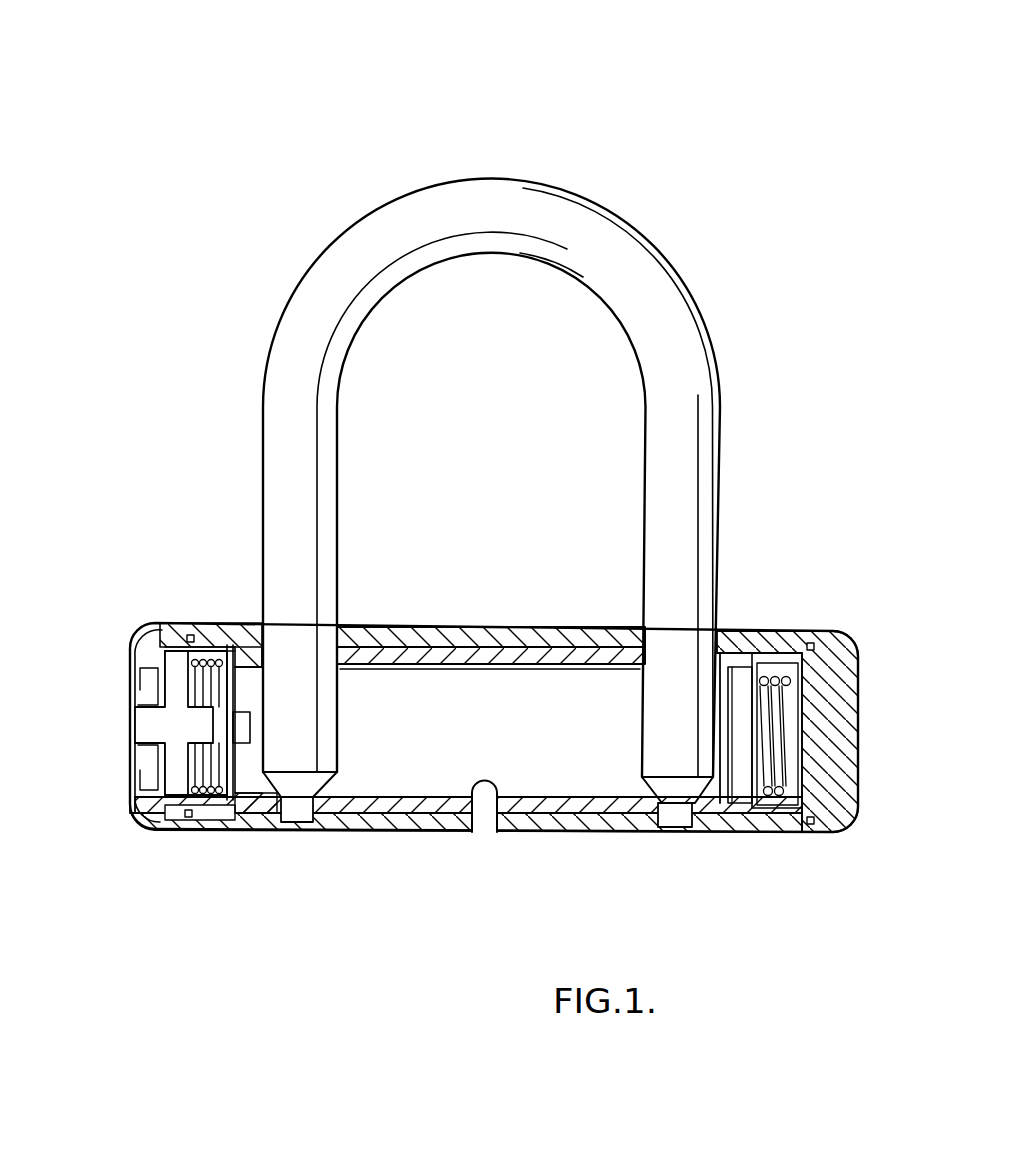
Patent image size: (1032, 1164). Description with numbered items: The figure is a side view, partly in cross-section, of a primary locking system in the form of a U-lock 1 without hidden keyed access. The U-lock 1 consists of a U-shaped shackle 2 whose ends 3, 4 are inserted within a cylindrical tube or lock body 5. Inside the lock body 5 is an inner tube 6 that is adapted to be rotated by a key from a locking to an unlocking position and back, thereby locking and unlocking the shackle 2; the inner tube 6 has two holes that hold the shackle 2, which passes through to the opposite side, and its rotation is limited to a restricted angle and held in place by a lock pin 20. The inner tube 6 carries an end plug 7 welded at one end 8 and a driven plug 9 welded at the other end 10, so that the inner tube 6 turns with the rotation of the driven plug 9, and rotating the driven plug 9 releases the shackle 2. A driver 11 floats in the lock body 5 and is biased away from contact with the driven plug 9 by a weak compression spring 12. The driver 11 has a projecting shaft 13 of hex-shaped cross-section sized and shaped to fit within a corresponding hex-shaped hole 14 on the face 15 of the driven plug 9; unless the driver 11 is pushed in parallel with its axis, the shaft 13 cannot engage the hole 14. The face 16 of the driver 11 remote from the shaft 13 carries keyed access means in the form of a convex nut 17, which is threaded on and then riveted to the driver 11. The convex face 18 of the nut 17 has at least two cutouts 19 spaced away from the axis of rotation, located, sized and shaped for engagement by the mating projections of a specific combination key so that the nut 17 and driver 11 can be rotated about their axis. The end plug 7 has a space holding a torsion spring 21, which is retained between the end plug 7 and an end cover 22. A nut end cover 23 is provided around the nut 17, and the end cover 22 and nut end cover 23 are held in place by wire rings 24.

The U-lock 1 is at (363, 150).
The U-shaped shackle 2 is at (616, 259).
The shackle end 3 is at (297, 820).
The shackle end 4 is at (675, 823).
The lock body 5 is at (390, 628).
The inner tube 6 is at (438, 650).
The end plug 7 is at (735, 683).
The end of inner tube 8 is at (720, 810).
The driven plug 9 is at (243, 762).
The other end of inner tube 10 is at (243, 827).
The driver 11 is at (177, 705).
The compression spring 12 is at (192, 772).
The projecting shaft 13 is at (207, 722).
The hole 14 is at (247, 665).
The face of driven plug 15 is at (220, 787).
The face of driver 16 is at (153, 657).
The convex nut 17 is at (128, 653).
The convex face 18 is at (150, 777).
The cutouts 19 is at (130, 752).
The lock pin 20 is at (487, 815).
The torsion spring 21 is at (790, 835).
The end cover 22 is at (820, 668).
The nut end cover 23 is at (140, 808).
The wire rings 24 is at (830, 795).